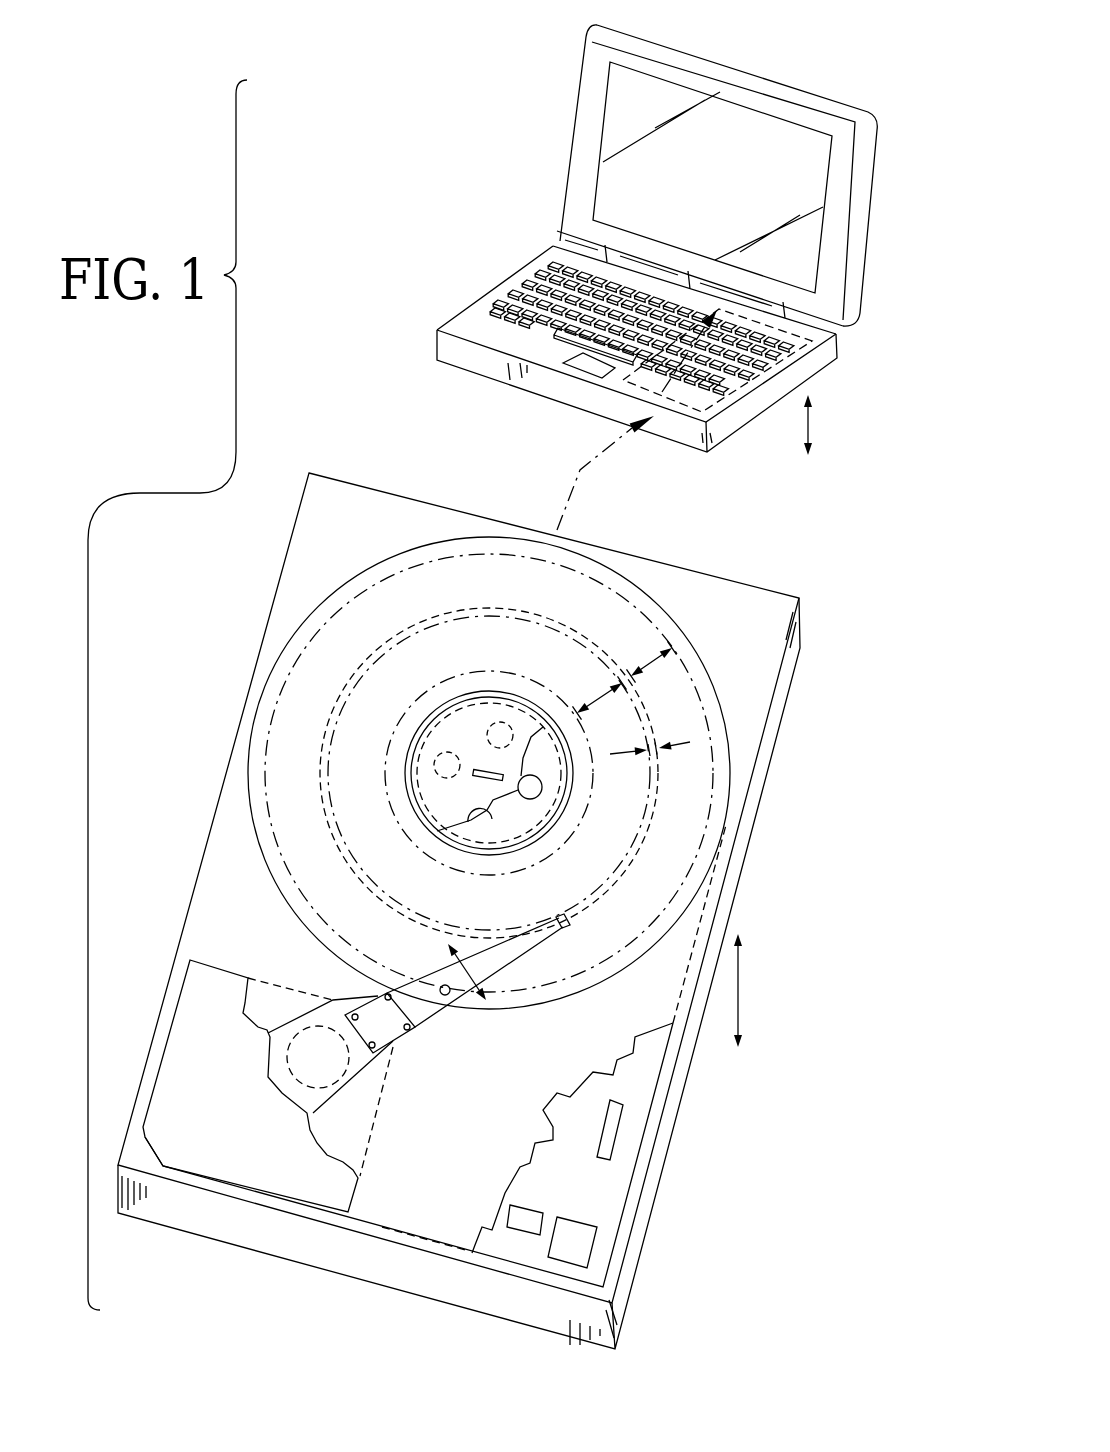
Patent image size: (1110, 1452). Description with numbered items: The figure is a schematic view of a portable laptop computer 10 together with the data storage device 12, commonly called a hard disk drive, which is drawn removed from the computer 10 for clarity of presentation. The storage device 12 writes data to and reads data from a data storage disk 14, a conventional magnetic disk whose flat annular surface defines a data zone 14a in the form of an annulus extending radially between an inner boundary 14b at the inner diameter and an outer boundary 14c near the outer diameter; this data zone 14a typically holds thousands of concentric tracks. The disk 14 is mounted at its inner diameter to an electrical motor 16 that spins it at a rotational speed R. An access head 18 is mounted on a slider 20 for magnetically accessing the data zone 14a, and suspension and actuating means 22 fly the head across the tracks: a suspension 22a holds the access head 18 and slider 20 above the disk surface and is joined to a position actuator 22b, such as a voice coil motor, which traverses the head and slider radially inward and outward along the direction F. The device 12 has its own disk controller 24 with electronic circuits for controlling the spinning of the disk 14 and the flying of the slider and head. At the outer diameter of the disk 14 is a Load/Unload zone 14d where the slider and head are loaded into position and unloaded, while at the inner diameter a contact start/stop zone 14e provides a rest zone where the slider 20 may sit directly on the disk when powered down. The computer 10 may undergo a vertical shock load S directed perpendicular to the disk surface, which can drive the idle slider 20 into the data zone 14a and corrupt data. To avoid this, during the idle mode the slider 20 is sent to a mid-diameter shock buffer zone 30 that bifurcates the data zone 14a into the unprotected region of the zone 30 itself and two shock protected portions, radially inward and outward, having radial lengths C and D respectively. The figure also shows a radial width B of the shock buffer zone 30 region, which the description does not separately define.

The portable laptop computer 10 is at (563, 128).
The data storage device 12 is at (722, 407).
The data storage disk 14 is at (246, 741).
The data zone 14a is at (506, 596).
The inner boundary 14b is at (488, 671).
The outer boundary 14c is at (478, 552).
The Load/Unload zone 14d is at (617, 583).
The contact start/stop zone 14e is at (411, 717).
The electrical motor 16 is at (503, 827).
The access head 18 is at (558, 917).
The slider 20 is at (572, 923).
The suspension and actuating means 22 is at (140, 998).
The suspension 22a is at (428, 1022).
The position actuator 22b is at (251, 1118).
The disk controller 24 is at (586, 1194).
The shock buffer zone 30 is at (652, 790).
The vertical shock load S is at (812, 423).
The rotational speed R is at (305, 694).
The radial length of outer protected portion D is at (649, 664).
The radial length of inner protected portion C is at (600, 697).
The boundary zone width B is at (689, 742).
The direction of head traversal F is at (460, 1008).